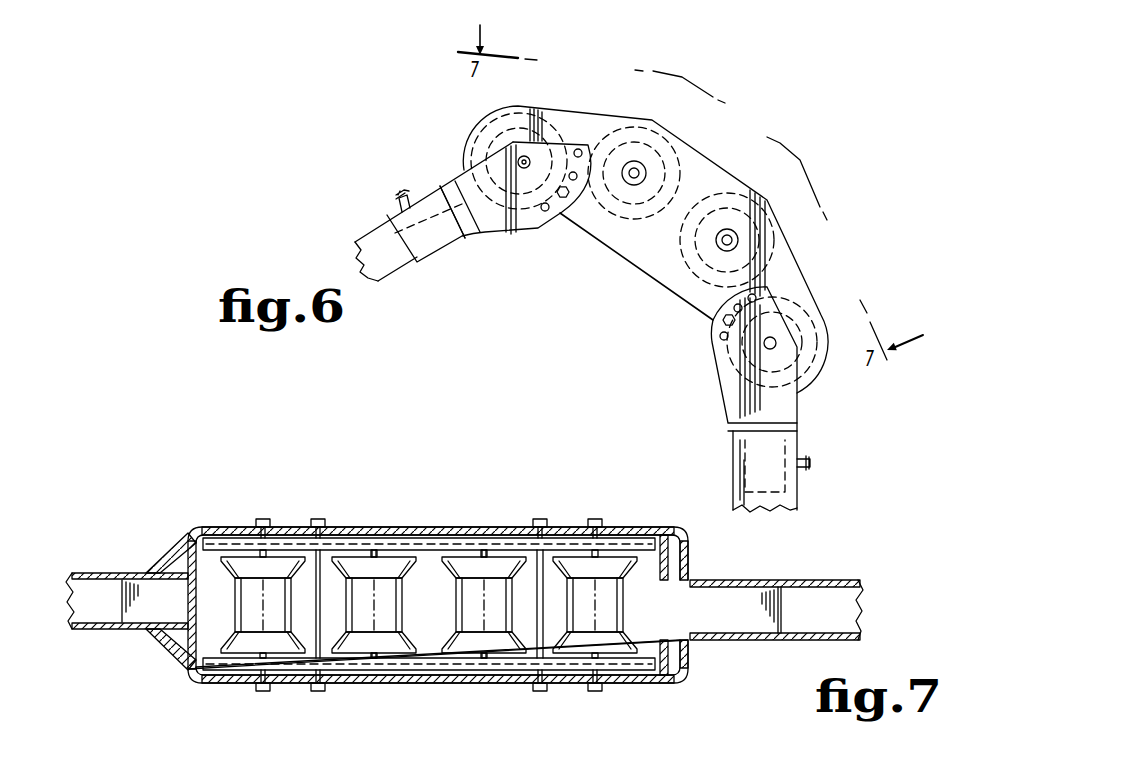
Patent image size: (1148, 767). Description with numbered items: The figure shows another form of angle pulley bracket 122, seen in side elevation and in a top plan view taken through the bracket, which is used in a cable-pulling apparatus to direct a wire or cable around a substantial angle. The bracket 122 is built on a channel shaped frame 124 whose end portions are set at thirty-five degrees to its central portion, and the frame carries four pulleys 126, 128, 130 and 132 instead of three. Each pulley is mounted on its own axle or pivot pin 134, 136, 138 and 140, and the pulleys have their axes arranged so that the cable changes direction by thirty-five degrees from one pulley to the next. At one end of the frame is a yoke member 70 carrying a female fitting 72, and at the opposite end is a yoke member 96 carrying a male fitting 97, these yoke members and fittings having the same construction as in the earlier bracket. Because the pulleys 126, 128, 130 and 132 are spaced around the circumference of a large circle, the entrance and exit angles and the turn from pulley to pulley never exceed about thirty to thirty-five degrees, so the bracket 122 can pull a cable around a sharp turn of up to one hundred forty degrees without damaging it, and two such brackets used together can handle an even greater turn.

In FIG. 6, the yoke member 70 is at (372, 215).
In FIG. 7, the yoke member 70 is at (126, 565).
In FIG. 6, the female fitting 72 is at (400, 245).
In FIG. 7, the female fitting 72 is at (112, 631).
In FIG. 6, the yoke member 96 is at (799, 407).
In FIG. 7, the yoke member 96 is at (711, 567).
In FIG. 6, the male fitting 97 is at (778, 482).
In FIG. 7, the male fitting 97 is at (751, 617).
In FIG. 6, the angle pulley bracket 122 is at (711, 150).
In FIG. 7, the angle pulley bracket 122 is at (474, 528).
In FIG. 6, the channel shaped frame 124 is at (593, 235).
In FIG. 7, the channel shaped frame 124 is at (465, 677).
In FIG. 6, the pulley 126 is at (485, 141).
In FIG. 7, the pulley 126 is at (243, 568).
In FIG. 6, the pulley 128 is at (613, 137).
In FIG. 7, the pulley 128 is at (358, 567).
In FIG. 6, the pulley 130 is at (733, 193).
In FIG. 7, the pulley 130 is at (460, 570).
In FIG. 6, the pulley 132 is at (815, 305).
In FIG. 7, the pulley 132 is at (603, 577).
In FIG. 6, the axle or pivot pin 134 is at (526, 169).
In FIG. 7, the axle or pivot pin 134 is at (266, 690).
In FIG. 6, the axle or pivot pin 136 is at (637, 180).
In FIG. 7, the axle or pivot pin 136 is at (376, 677).
In FIG. 6, the axle or pivot pin 138 is at (738, 240).
In FIG. 7, the axle or pivot pin 138 is at (485, 540).
In FIG. 6, the axle or pivot pin 140 is at (764, 345).
In FIG. 7, the axle or pivot pin 140 is at (598, 690).